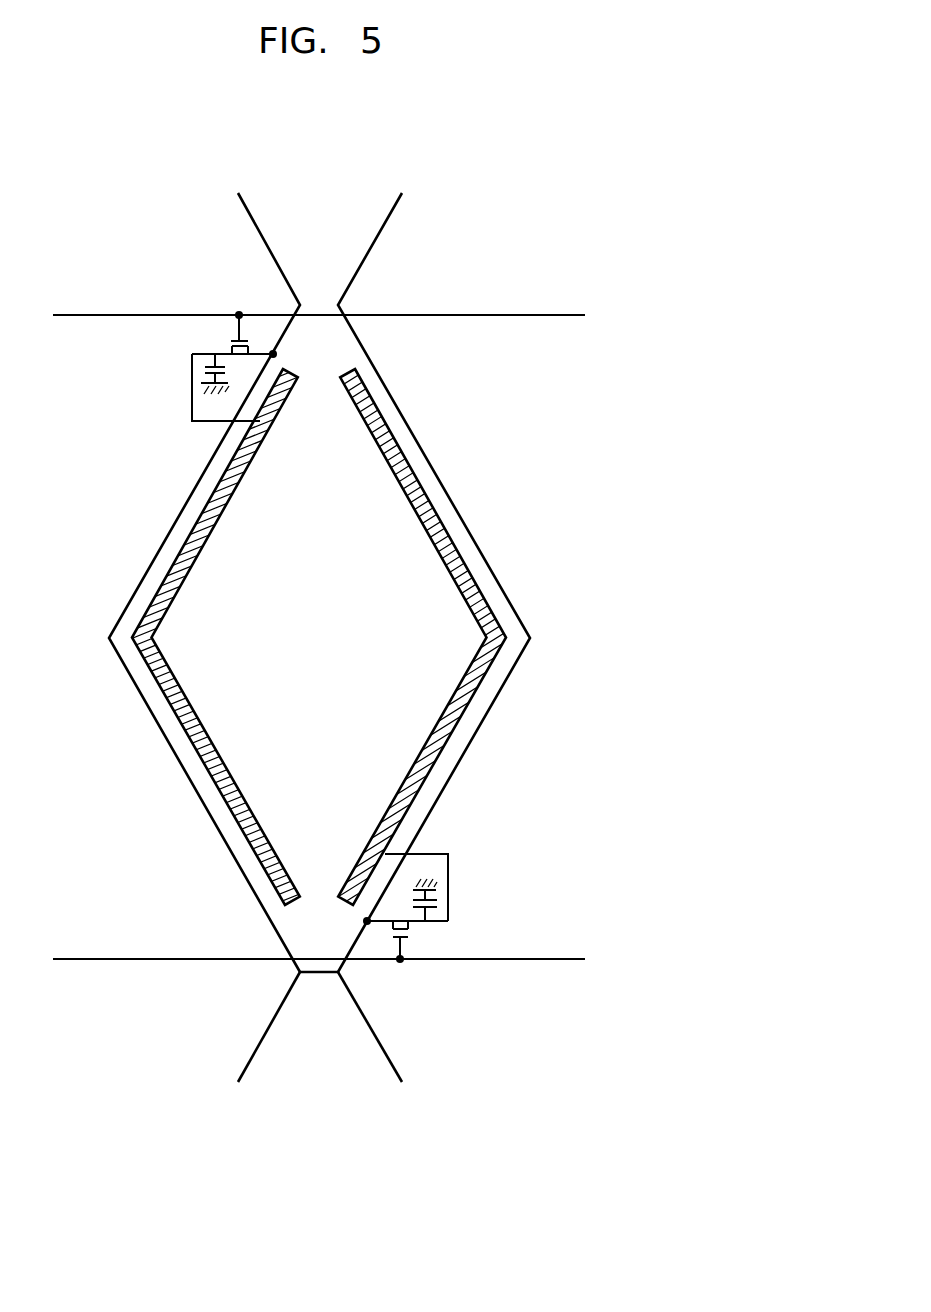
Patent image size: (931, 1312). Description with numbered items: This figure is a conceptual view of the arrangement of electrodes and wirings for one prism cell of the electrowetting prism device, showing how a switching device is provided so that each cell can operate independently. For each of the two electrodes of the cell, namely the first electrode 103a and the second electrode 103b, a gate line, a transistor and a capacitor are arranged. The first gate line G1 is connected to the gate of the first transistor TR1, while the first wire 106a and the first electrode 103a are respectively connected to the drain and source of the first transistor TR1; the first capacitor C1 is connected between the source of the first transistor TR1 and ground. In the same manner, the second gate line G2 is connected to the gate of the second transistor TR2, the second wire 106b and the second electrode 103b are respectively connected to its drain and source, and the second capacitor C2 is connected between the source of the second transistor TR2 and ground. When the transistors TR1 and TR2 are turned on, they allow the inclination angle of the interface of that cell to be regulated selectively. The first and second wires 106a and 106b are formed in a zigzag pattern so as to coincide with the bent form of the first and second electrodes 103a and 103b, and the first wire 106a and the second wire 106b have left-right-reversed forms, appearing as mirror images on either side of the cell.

The first gate line G1 is at (319, 299).
The second gate line G2 is at (319, 943).
The first transistor TR1 is at (234, 320).
The second transistor TR2 is at (405, 956).
The first capacitor C1 is at (207, 387).
The second capacitor C2 is at (433, 887).
The first electrode 103a is at (202, 748).
The second electrode 103b is at (437, 532).
The first wire 106a is at (255, 1060).
The second wire 106b is at (383, 1058).